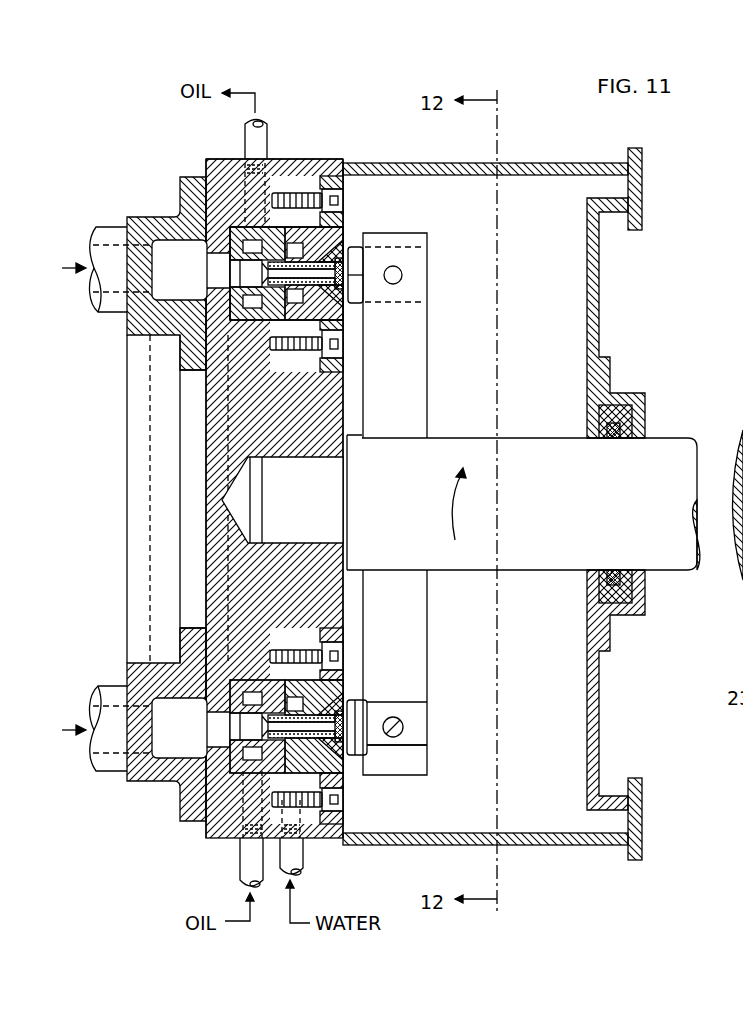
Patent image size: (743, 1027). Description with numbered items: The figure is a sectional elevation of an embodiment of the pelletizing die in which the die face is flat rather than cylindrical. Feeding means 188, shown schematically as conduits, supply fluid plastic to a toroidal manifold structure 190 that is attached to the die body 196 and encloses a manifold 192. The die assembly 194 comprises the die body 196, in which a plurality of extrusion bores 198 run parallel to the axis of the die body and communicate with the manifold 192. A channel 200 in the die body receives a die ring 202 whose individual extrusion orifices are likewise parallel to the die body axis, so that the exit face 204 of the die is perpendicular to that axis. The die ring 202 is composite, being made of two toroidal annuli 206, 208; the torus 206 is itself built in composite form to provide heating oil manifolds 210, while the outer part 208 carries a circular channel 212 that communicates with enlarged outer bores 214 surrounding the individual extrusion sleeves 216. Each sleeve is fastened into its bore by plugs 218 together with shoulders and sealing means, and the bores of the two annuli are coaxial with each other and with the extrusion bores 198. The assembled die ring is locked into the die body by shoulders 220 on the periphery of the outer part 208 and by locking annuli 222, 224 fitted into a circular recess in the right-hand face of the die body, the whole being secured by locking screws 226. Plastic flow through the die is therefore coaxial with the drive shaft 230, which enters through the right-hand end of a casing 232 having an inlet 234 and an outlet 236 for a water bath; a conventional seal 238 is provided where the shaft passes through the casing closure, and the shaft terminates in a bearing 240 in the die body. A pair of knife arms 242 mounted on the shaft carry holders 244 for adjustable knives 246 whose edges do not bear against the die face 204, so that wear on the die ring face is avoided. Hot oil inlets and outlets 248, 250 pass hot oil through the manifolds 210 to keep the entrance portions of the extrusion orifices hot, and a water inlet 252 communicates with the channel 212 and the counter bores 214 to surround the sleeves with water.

The feeding means 188 is at (112, 228).
The toroidal manifold structure 190 is at (165, 213).
The manifold 192 is at (125, 334).
The die assembly 194 is at (292, 151).
The die body 196 is at (224, 158).
The extrusion bores 198 is at (207, 272).
The channel 200 is at (207, 768).
The die ring 202 is at (358, 233).
The exit face 204 is at (343, 761).
The toroidal annulus 206 is at (206, 370).
The outer part of die ring 208 is at (345, 304).
The heating oil manifolds 210 is at (258, 250).
The circular channel 212 is at (348, 232).
The enlarged outer bores 214 is at (347, 318).
The extrusion sleeves 216 is at (350, 330).
The plugs 218 is at (350, 258).
The shoulders 220 is at (343, 782).
The locking annulus 222 is at (345, 184).
The locking annulus 224 is at (345, 366).
The locking screws 226 is at (333, 645).
The drive shaft 230 is at (518, 437).
The casing 232 is at (530, 163).
The inlet 234 is at (626, 835).
The outlet 236 is at (628, 200).
The seal 238 is at (612, 440).
The bearing 240 is at (290, 460).
The knife arms 242 is at (428, 322).
The holders 244 is at (413, 250).
The knives 246 is at (350, 290).
The hot oil inlet 248 is at (240, 868).
The hot oil outlet 250 is at (247, 128).
The water inlet 252 is at (300, 872).